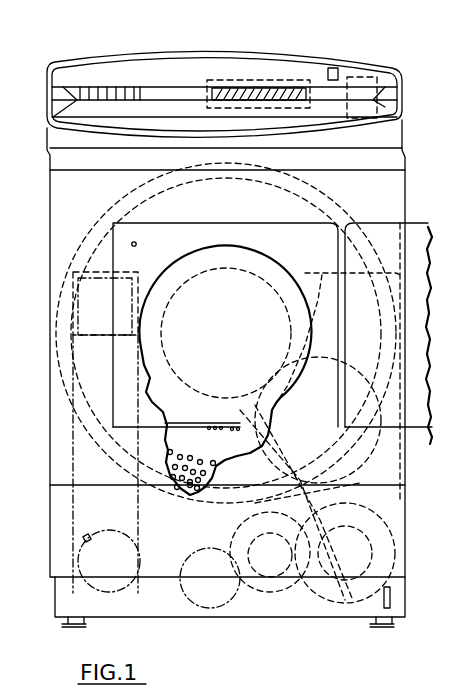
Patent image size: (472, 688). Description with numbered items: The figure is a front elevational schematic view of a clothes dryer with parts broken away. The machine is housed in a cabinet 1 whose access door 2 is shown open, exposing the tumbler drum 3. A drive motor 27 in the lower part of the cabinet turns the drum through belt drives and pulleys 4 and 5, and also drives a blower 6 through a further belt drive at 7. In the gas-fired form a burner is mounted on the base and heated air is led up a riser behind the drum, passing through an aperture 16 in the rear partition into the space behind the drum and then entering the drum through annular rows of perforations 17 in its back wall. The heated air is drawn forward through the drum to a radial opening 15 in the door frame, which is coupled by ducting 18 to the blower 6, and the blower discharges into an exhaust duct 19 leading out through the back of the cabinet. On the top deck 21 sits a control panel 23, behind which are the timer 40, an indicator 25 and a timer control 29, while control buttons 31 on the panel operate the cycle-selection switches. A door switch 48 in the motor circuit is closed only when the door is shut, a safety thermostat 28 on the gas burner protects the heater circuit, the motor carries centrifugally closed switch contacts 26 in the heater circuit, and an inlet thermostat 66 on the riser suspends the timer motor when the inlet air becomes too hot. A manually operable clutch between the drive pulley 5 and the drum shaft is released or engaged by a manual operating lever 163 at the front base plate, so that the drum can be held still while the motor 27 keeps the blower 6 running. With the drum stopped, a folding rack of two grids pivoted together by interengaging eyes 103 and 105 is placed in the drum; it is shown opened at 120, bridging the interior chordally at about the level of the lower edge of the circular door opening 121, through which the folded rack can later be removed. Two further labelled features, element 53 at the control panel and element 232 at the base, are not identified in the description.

The cabinet 1 is at (407, 186).
The access door 2 is at (416, 234).
The tumbler drum 3 is at (345, 212).
The pulley 4 is at (405, 460).
The drive pulley 5 is at (297, 283).
The blower 6 is at (397, 542).
The blower belt drive 7 is at (318, 612).
The radial opening 15 is at (464, 388).
The aperture 16 is at (75, 330).
The perforations 17 is at (186, 494).
The ducting 18 is at (407, 367).
The exhaust duct 19 is at (188, 560).
The top deck 21 is at (380, 148).
The control panel 23 is at (355, 70).
The indicator 25 is at (240, 80).
The centrifugally closed switch contacts 26 is at (84, 537).
The drive motor 27 is at (279, 602).
The safety thermostat 28 is at (108, 272).
The timer control 29 is at (334, 68).
The control buttons 31 is at (84, 90).
The timer 40 is at (405, 76).
The door switch 48 is at (132, 242).
The heater element 53 is at (270, 92).
The inlet thermostat 66 is at (70, 296).
The interengaging eye 103 is at (220, 429).
The interengaging eye 105 is at (248, 652).
The rack in open planar position 120 is at (240, 414).
The circular door opening 121 is at (141, 347).
The manual operating lever 163 is at (405, 593).
The foot 232 is at (53, 620).